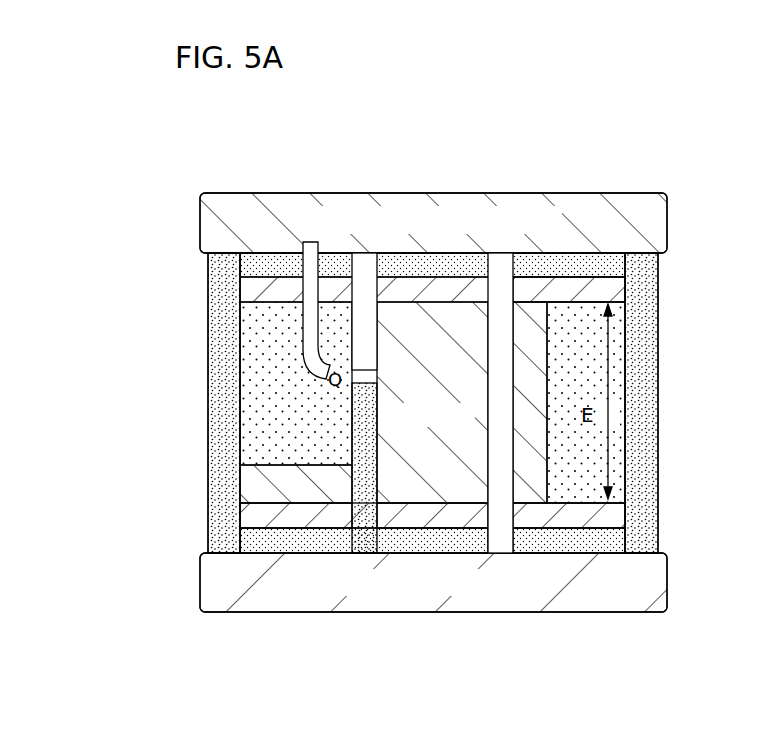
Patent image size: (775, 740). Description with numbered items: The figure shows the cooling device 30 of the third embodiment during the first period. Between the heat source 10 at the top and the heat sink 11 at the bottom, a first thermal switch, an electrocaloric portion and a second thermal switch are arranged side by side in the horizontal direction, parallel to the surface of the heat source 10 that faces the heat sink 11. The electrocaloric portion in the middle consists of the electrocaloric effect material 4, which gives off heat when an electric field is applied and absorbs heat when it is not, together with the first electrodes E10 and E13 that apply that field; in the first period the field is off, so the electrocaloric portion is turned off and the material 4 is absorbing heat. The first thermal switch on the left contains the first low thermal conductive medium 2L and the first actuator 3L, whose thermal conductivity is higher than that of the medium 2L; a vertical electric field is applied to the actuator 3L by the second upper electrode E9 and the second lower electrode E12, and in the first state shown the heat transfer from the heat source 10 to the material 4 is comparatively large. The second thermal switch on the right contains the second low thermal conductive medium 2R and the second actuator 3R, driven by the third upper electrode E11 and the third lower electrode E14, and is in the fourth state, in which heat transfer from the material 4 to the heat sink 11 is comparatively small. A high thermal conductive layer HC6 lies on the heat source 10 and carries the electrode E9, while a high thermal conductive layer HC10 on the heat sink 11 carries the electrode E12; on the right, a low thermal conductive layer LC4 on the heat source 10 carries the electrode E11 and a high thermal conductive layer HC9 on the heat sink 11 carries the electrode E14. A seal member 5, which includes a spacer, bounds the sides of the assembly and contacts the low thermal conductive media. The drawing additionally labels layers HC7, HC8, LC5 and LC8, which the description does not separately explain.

The cooling device 30 is at (618, 108).
The heat source 10 is at (220, 227).
The heat sink 11 is at (653, 587).
The seal member 5 is at (223, 402).
The high thermal conductive layer HC6 is at (253, 265).
The heat conducting member HC7 is at (360, 437).
The heat conducting member HC8 is at (550, 380).
The high thermal conductive layer HC9 is at (600, 540).
The high thermal conductive layer HC10 is at (280, 540).
The low thermal conductive layer LC4 is at (613, 267).
The liquid crystal layer LC5 is at (493, 288).
The liquid crystal layer LC8 is at (340, 510).
The second upper electrode E9 is at (270, 287).
The first electrode E10 is at (495, 272).
The third upper electrode E11 is at (607, 288).
The second lower electrode E12 is at (270, 530).
The first electrode E13 is at (395, 518).
The third lower electrode E14 is at (567, 517).
The first low thermal conductive medium 2L is at (250, 485).
The second low thermal conductive medium 2R is at (535, 352).
The first actuator 3L is at (277, 377).
The second actuator 3R is at (583, 468).
The electrocaloric effect material 4 is at (458, 486).